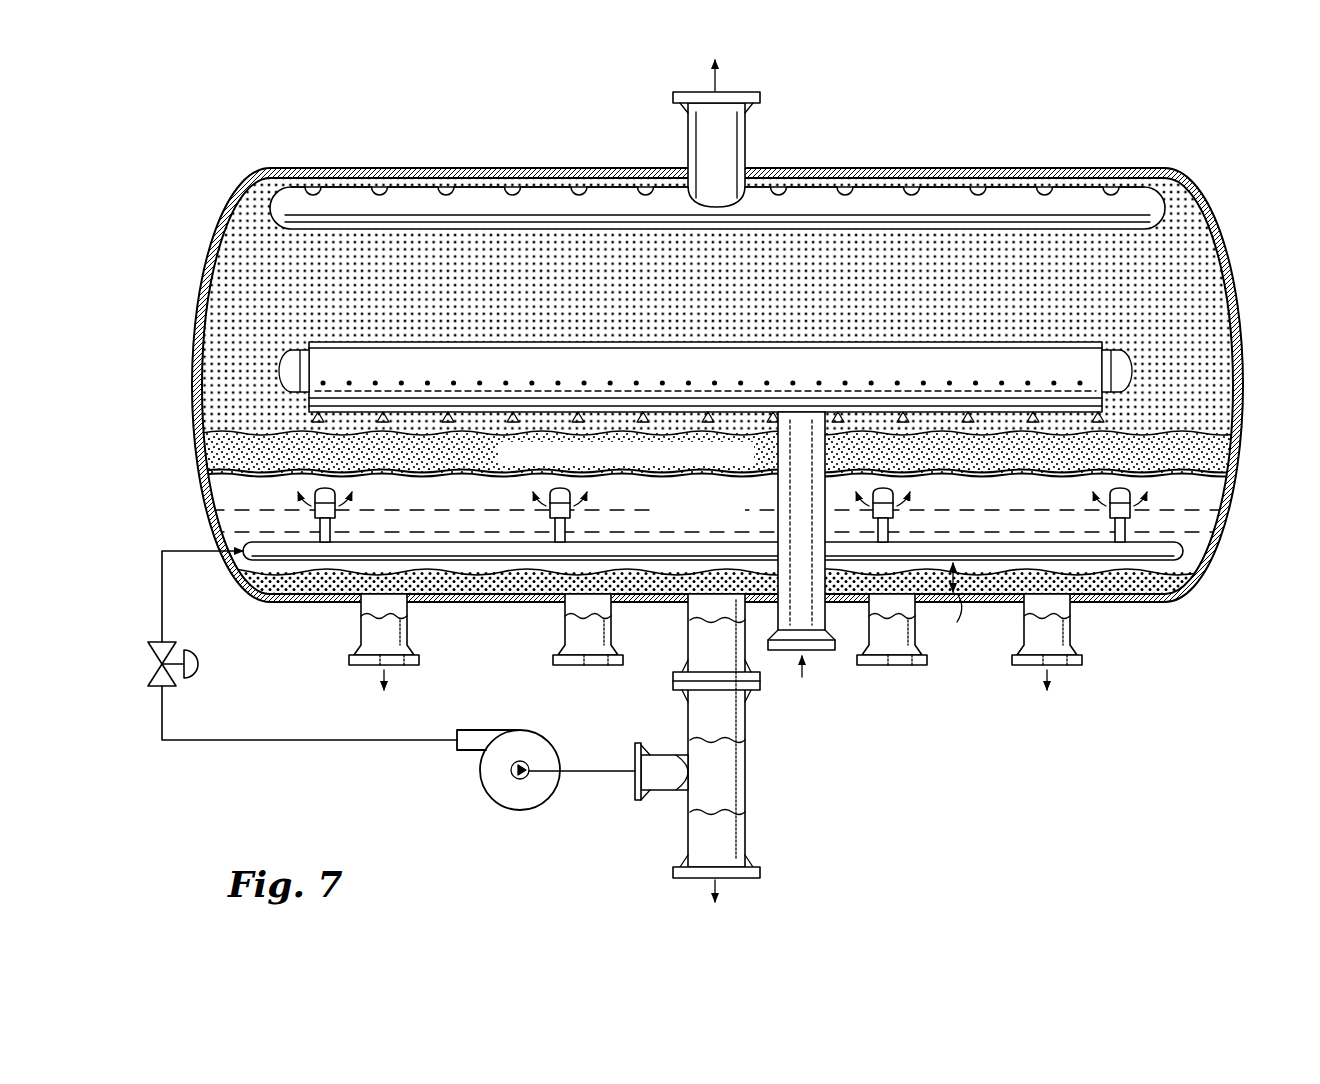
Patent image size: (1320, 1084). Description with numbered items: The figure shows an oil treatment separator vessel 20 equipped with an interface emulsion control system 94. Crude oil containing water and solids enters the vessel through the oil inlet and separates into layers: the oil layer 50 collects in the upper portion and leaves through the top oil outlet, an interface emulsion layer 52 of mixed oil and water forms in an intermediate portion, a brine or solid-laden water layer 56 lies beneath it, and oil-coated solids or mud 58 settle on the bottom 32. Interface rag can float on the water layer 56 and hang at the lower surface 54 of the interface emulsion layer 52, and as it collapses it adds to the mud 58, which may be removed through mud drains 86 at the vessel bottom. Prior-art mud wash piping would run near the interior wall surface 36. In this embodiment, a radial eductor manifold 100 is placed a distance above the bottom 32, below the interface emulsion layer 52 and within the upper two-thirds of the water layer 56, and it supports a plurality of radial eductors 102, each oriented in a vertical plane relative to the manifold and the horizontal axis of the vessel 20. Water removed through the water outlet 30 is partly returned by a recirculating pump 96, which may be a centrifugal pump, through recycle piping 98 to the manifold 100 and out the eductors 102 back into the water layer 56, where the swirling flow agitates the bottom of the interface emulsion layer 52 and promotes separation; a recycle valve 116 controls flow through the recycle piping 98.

The separator vessel 20 is at (705, 394).
The interface emulsion control system 94 is at (1183, 162).
The oil layer 50 is at (253, 283).
The interface emulsion layer 52 is at (1197, 453).
The lower surface of the interface emulsion layer 54 is at (1176, 473).
The water layer 56 is at (230, 494).
The mud 58 is at (275, 608).
The interior wall surface 36 is at (493, 602).
The radial eductor manifold 100 is at (1147, 551).
The radial eductors 102 is at (326, 512).
The bottom 32 is at (1103, 605).
The mud drains 86 is at (1067, 666).
The recycle valve 116 is at (173, 682).
The recycle piping 98 is at (230, 742).
The recirculating pump 96 is at (492, 781).
The water outlet 30 is at (750, 878).